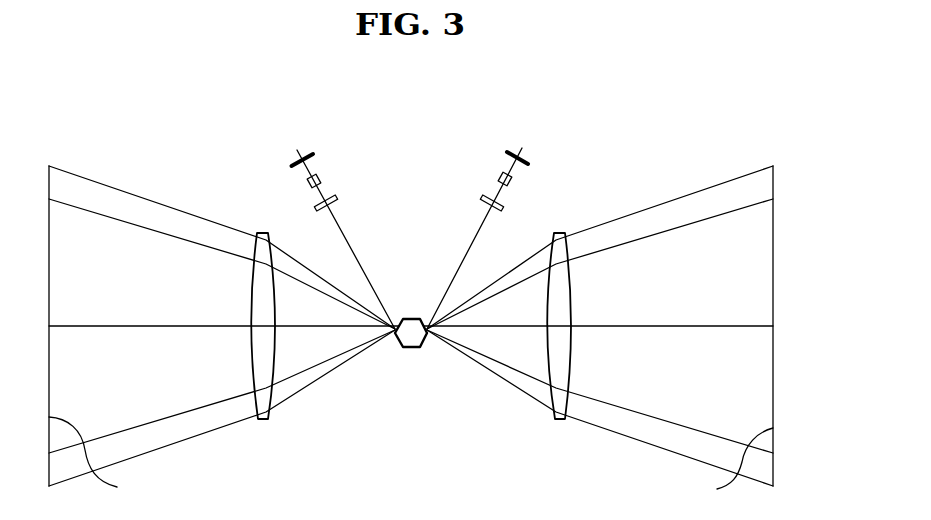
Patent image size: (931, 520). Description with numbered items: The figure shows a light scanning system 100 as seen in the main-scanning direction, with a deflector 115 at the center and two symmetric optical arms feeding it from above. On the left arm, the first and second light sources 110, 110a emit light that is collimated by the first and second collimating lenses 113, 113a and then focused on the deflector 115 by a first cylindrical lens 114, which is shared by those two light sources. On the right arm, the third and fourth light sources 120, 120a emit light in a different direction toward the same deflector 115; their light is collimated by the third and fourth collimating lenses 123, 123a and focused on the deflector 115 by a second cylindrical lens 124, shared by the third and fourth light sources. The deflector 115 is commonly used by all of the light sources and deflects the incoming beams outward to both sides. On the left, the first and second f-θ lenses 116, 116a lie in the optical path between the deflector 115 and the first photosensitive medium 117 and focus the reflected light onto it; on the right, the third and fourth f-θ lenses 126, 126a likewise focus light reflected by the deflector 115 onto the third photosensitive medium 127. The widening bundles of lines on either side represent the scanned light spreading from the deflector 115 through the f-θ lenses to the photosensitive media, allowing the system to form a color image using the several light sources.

The light scanning system 100 is at (684, 131).
The first light source 110 is at (341, 203).
The second light source 110a is at (309, 151).
The first collimating lens 113 is at (372, 164).
The second collimating lens 113a is at (321, 176).
The first cylindrical lens 114 is at (339, 198).
The deflector 115 is at (409, 348).
The first f-θ lens 116 is at (200, 326).
The second f-θ lens 116a is at (251, 352).
The first photosensitive medium 117 is at (100, 460).
The third light source 120 is at (486, 202).
The fourth light source 120a is at (511, 150).
The third collimating lens 123 is at (472, 148).
The fourth collimating lens 123a is at (499, 175).
The second cylindrical lens 124 is at (481, 197).
The third f-θ lens 126 is at (622, 326).
The fourth f-θ lens 126a is at (563, 348).
The third photosensitive medium 127 is at (725, 468).